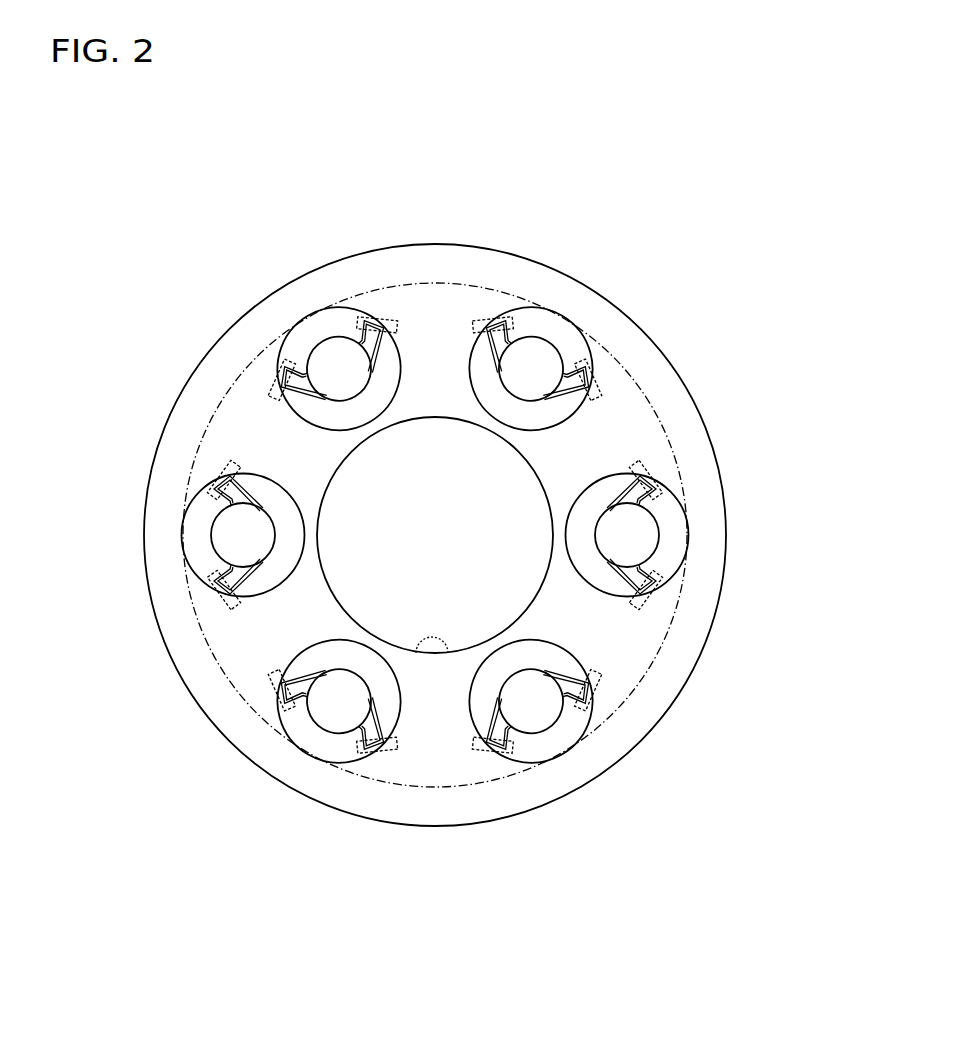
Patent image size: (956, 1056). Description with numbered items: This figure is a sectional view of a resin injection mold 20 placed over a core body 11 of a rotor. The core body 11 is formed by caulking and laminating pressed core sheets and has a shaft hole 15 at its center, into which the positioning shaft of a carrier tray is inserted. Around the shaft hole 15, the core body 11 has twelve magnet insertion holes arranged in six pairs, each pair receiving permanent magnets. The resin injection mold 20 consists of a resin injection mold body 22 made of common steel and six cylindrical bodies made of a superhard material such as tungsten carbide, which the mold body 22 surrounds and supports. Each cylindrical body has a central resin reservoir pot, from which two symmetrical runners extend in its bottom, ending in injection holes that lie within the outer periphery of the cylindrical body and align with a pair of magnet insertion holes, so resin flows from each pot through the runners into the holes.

The core body 11 is at (650, 380).
The shaft hole 15 is at (450, 637).
The resin injection mold 20 is at (518, 250).
The resin injection mold body 22 is at (432, 268).